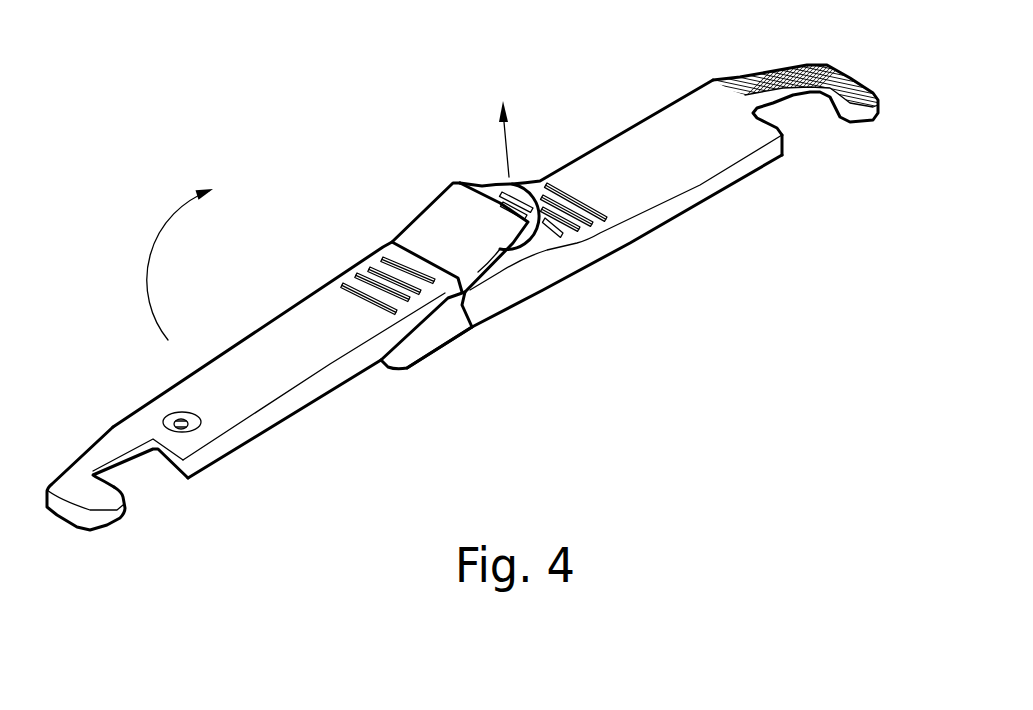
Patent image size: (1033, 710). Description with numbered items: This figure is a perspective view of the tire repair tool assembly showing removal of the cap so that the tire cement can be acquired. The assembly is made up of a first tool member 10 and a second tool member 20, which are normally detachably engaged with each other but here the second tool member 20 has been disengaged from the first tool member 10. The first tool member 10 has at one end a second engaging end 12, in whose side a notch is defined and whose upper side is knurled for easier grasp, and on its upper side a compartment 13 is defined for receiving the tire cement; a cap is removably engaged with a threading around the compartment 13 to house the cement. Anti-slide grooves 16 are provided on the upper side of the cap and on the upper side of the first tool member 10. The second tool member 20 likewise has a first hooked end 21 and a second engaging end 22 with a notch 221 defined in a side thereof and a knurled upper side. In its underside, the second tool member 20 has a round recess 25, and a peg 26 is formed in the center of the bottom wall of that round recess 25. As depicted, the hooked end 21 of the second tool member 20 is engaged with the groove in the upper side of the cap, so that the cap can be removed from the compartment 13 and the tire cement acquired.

The first tool member 10 is at (653, 130).
The second engaging end 12 is at (815, 66).
The compartment 13 is at (393, 365).
The anti-slide grooves 16 is at (498, 198).
The second tool member 20 is at (291, 318).
The first hooked end 21 is at (532, 228).
The second engaging end 22 is at (104, 507).
The notch 221 is at (140, 490).
The round recess 25 is at (184, 418).
The peg 26 is at (170, 415).